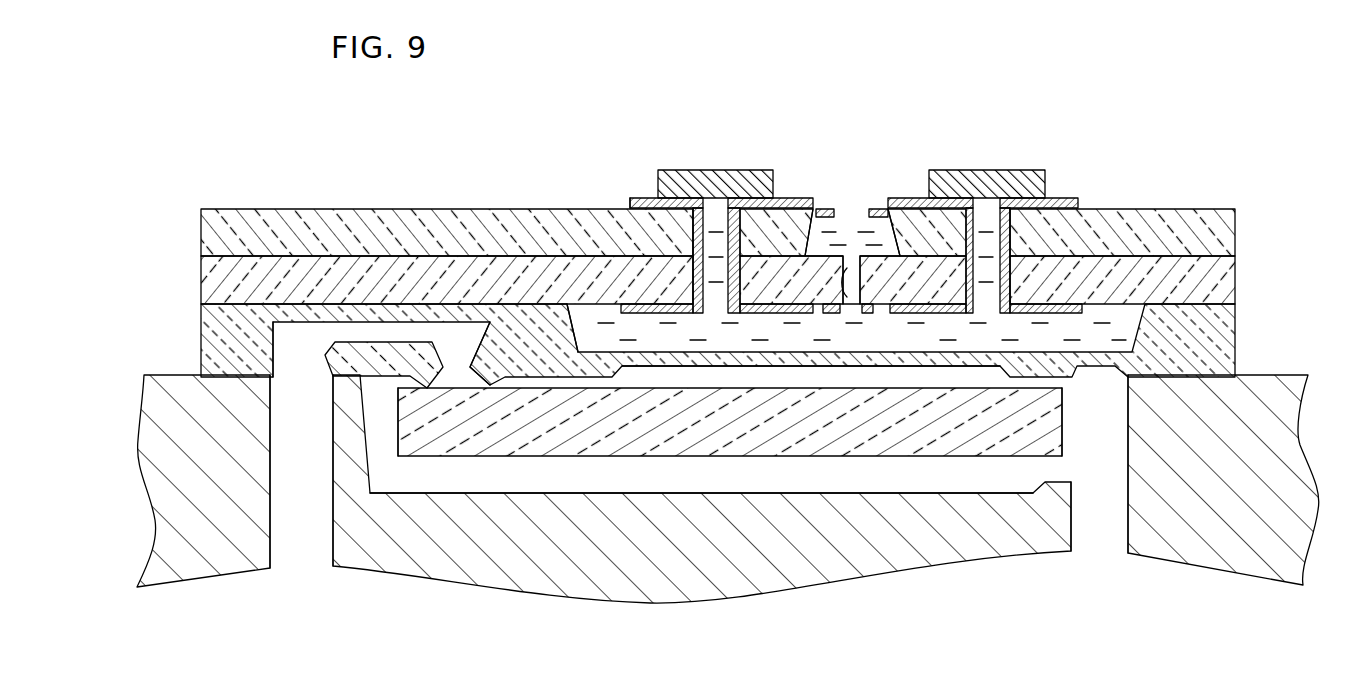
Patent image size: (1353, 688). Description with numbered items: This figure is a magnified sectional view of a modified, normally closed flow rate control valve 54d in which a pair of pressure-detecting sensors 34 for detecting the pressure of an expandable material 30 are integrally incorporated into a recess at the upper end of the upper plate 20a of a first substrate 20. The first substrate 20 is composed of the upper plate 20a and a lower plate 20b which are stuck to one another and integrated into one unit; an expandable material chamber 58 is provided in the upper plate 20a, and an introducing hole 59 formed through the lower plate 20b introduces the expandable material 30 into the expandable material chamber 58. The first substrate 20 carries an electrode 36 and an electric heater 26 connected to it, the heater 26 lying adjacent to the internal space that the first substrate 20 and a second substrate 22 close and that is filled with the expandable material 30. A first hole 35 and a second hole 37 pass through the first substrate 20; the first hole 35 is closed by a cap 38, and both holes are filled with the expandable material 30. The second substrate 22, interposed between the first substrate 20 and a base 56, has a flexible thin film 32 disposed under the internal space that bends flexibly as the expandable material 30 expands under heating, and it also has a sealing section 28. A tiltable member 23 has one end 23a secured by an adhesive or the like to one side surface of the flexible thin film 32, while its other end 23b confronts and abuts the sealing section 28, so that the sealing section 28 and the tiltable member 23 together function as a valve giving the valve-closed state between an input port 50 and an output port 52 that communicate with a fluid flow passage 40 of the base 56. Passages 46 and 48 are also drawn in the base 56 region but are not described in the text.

The first substrate 20 is at (660, 256).
The upper plate 20a is at (220, 243).
The lower plate 20b is at (220, 283).
The second substrate 22 is at (1238, 330).
The tiltable member 23 is at (867, 448).
The one end of tiltable member 23a is at (1032, 422).
The other end of tiltable member 23b is at (445, 408).
The electric heater 26 is at (867, 308).
The sealing section 28 is at (487, 335).
The expandable material 30 is at (605, 330).
The flexible thin film 32 is at (792, 365).
The pressure-detecting sensors 34 is at (828, 210).
The first hole 35 is at (703, 222).
The electrode 36 is at (640, 198).
The second hole 37 is at (1003, 236).
The cap 38 is at (709, 178).
The fluid flow passage 40 is at (701, 476).
The through hole 46 is at (1103, 496).
The through hole 48 is at (303, 513).
The input port 50 is at (407, 379).
The output port 52 is at (298, 368).
The flow rate control valve 54d is at (1135, 155).
The base 56 is at (1262, 376).
The expandable material chamber 58 is at (887, 210).
The introducing hole 59 is at (811, 226).